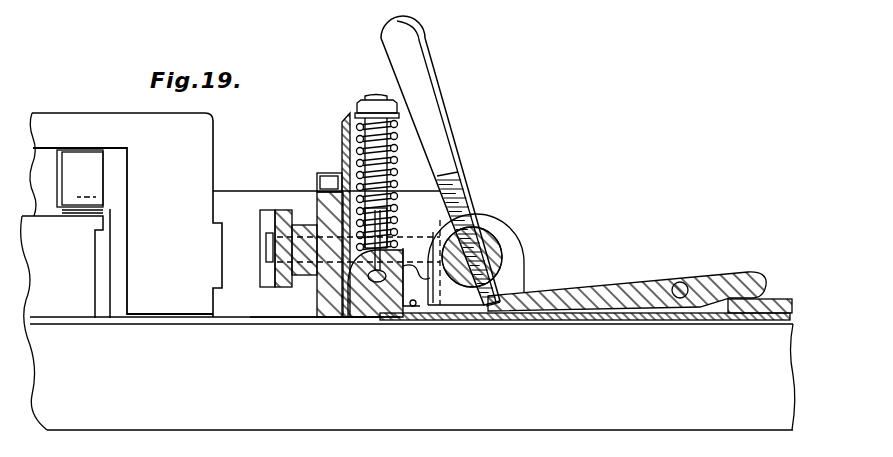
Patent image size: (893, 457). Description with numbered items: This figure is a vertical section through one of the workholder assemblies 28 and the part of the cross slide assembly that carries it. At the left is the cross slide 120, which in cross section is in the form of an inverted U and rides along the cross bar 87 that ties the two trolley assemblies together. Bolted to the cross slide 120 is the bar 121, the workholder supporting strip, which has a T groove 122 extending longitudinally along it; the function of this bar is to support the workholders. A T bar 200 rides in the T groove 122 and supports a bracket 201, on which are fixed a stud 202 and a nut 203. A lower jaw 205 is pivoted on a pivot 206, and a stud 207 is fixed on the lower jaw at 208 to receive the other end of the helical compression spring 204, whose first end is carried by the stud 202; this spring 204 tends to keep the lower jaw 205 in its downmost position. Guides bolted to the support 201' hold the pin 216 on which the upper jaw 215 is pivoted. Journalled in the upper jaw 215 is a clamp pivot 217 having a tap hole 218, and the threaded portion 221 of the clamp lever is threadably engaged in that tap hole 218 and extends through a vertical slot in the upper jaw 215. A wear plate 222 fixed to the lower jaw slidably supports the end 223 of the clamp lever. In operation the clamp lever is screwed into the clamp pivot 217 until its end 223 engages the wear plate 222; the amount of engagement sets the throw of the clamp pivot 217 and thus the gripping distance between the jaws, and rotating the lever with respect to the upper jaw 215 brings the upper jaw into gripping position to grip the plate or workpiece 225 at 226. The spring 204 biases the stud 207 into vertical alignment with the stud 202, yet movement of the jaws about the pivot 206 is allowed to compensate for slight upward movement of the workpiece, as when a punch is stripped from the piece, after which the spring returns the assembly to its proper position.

The cross slide 120 is at (117, 126).
The bar 121 is at (225, 197).
The T groove 122 is at (266, 215).
The cross bar 87 is at (65, 319).
The T bar 200 is at (263, 267).
The bracket 201 is at (326, 198).
The support 201' is at (315, 339).
The stud 202 is at (376, 148).
The nut 203 is at (373, 104).
The helical compression spring 204 is at (358, 148).
The lower jaw 205 is at (400, 318).
The pivot 206 is at (376, 318).
The stud 207 is at (440, 190).
The stud fixing location 208 is at (340, 277).
The upper jaw 215 is at (603, 290).
The pin 216 is at (681, 284).
The clamp pivot 217 is at (496, 262).
The tap hole 218 is at (501, 240).
The threaded portion 221 is at (382, 215).
The wear plate 222 is at (497, 309).
The end of clamp lever 223 is at (502, 282).
The workpiece 225 is at (782, 315).
The gripping location 226 is at (763, 286).
The workholder assembly 28 is at (544, 203).